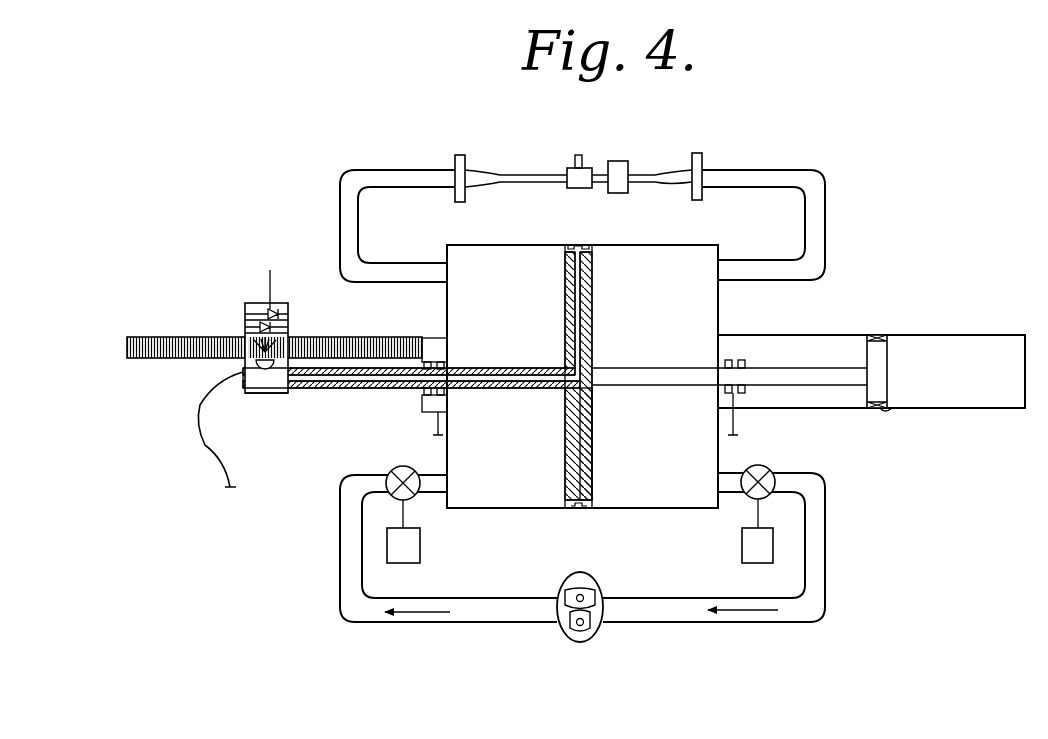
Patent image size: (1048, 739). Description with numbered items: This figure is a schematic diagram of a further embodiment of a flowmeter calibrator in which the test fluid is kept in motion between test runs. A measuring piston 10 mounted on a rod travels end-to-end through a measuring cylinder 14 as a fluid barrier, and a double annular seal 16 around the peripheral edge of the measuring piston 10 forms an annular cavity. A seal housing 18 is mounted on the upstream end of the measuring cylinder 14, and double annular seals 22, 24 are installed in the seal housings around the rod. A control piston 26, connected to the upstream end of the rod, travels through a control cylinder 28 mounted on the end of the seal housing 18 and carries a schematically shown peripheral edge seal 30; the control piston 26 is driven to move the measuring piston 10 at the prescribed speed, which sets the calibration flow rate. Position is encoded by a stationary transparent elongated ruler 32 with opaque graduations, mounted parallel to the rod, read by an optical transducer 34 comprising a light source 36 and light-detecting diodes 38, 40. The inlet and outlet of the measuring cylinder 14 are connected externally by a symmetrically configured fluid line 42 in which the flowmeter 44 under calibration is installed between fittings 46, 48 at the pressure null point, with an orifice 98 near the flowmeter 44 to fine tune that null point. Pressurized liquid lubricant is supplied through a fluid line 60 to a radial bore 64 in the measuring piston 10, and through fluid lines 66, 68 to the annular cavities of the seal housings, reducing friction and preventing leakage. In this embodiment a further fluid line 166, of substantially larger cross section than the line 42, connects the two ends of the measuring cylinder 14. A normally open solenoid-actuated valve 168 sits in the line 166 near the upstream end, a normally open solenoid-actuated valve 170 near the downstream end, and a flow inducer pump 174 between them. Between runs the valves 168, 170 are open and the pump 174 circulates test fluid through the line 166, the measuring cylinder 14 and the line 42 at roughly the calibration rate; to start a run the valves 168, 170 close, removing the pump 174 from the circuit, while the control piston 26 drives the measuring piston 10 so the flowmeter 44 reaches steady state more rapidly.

The measuring piston 10 is at (595, 318).
The measuring cylinder 14 is at (665, 244).
The double annular seal 16 is at (580, 242).
The seal housing 18 is at (730, 335).
The double annular seal 22 is at (747, 397).
The double annular seal 24 is at (410, 401).
The control piston 26 is at (880, 365).
The control cylinder 28 is at (790, 335).
The peripheral edge seal 30 is at (890, 406).
The transparent elongated ruler 32 is at (330, 337).
The optical transducer 34 is at (270, 393).
The light source 36 is at (245, 366).
The light-detecting diode 38 is at (262, 327).
The light-detecting diode 40 is at (279, 262).
The fluid line 42 is at (790, 172).
The flowmeter 44 is at (582, 155).
The fitting 46 is at (462, 155).
The fitting 48 is at (700, 153).
The fluid line 60 is at (210, 458).
The radial bore 64 is at (566, 292).
The fluid line 66 is at (735, 425).
The fluid line 68 is at (438, 420).
The orifice 98 is at (622, 160).
The fluid line 166 is at (728, 620).
The solenoid-actuated valve 168 is at (772, 470).
The solenoid-actuated valve 170 is at (392, 471).
The flow inducer pump 174 is at (603, 636).